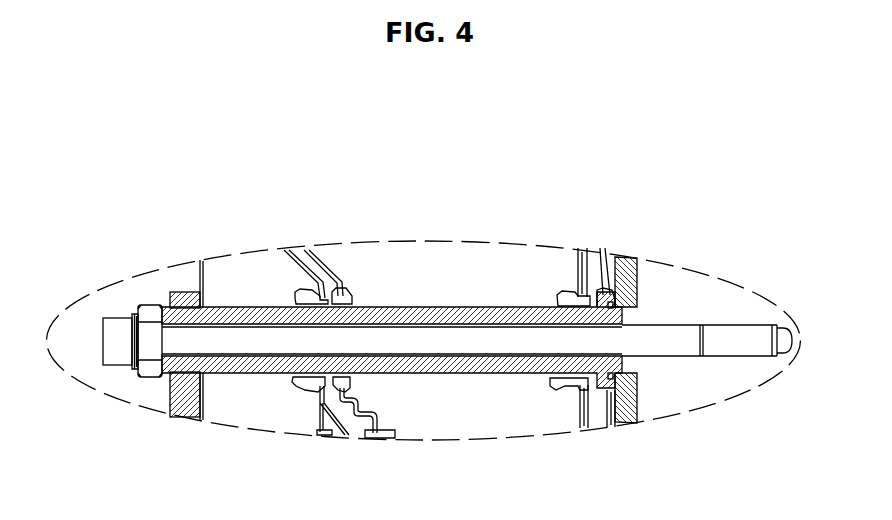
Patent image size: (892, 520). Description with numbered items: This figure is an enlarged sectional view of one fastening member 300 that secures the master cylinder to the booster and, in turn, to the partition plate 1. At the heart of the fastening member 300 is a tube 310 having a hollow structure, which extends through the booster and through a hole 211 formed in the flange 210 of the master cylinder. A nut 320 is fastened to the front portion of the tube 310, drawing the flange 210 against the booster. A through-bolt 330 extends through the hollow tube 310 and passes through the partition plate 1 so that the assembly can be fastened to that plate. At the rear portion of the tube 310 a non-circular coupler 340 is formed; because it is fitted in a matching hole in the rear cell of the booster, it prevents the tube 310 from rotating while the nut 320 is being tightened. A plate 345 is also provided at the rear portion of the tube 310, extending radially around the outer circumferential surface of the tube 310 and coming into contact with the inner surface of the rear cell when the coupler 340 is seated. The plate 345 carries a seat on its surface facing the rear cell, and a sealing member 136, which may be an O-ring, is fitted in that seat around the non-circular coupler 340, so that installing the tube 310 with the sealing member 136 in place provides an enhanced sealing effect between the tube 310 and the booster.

The partition plate 1 is at (628, 270).
The sealing member 136 is at (615, 377).
The flange 210 is at (184, 299).
The hole 211 is at (186, 377).
The fastening member 300 is at (363, 281).
The tube 310 is at (447, 378).
The nut 320 is at (148, 309).
The through-bolt 330 is at (500, 348).
The non-circular coupler 340 is at (618, 312).
The plate 345 is at (603, 297).